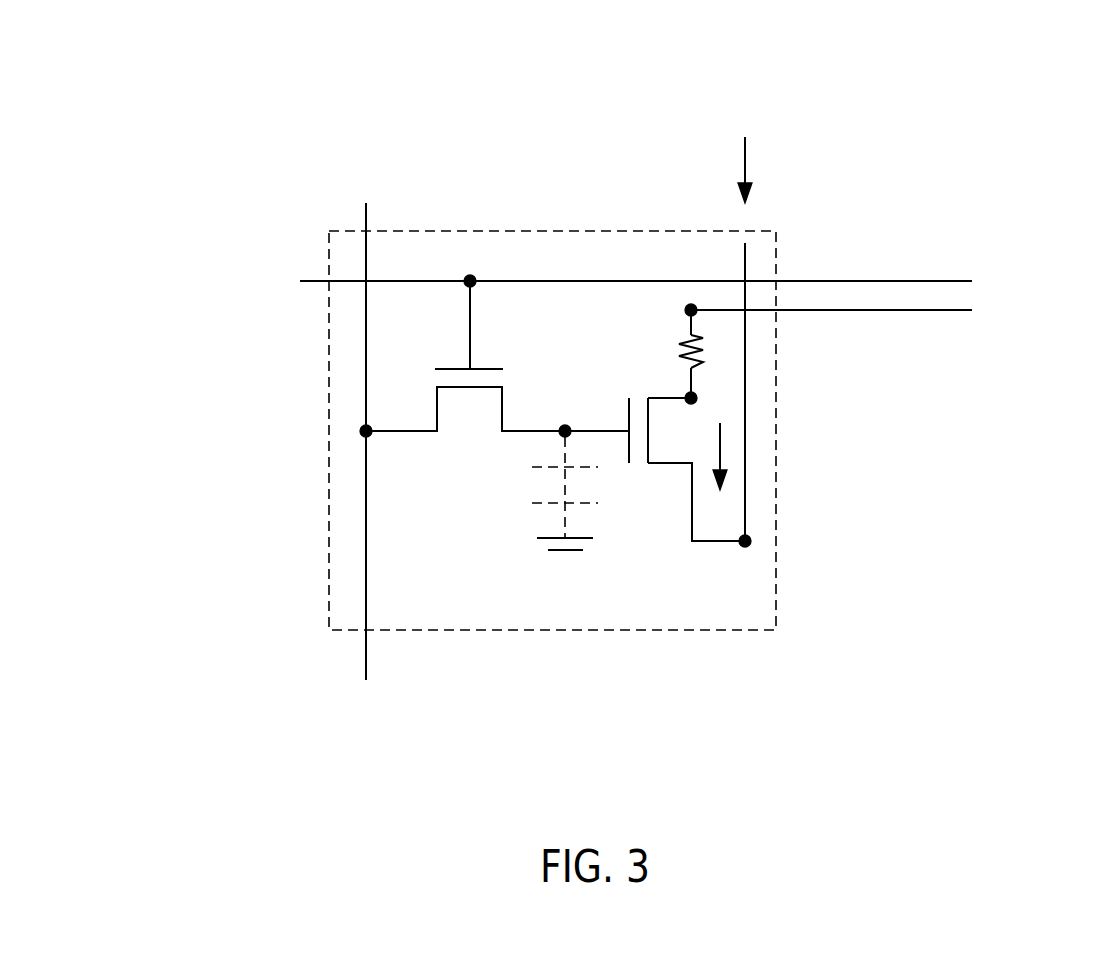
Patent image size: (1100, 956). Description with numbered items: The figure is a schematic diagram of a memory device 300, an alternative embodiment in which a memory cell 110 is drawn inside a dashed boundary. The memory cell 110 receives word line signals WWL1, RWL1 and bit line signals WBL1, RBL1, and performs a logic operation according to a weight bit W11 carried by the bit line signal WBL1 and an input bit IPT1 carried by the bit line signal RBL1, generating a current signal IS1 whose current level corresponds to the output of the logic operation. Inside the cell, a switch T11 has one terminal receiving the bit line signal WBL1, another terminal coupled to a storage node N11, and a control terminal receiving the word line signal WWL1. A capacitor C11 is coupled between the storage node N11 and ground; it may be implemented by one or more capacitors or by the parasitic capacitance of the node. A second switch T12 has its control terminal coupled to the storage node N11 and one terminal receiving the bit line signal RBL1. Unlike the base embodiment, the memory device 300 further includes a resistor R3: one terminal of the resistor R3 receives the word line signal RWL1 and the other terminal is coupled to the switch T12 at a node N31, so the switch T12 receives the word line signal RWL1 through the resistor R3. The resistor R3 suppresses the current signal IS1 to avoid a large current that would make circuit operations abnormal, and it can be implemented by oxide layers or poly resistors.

The memory device 300 is at (140, 54).
The memory cell 110 is at (776, 592).
The bit line signal WBL1 is at (363, 422).
The word line signal WWL1 is at (587, 281).
The word line signal RWL1 is at (873, 316).
The bit line signal RBL1 is at (697, 388).
The input bit IPT1 is at (745, 150).
The switch T11 is at (462, 363).
The switch T12 is at (690, 472).
The weight bit W11 is at (582, 410).
The storage node N11 is at (570, 437).
The capacitor C11 is at (540, 503).
The resistor R3 is at (669, 354).
The node N31 is at (697, 398).
The current signal IS1 is at (720, 445).